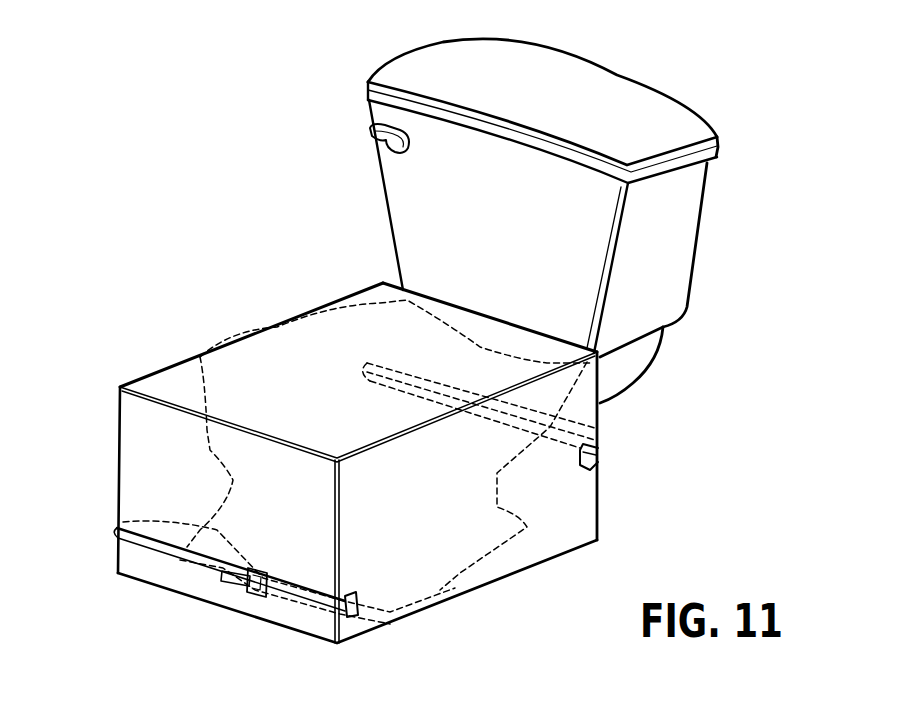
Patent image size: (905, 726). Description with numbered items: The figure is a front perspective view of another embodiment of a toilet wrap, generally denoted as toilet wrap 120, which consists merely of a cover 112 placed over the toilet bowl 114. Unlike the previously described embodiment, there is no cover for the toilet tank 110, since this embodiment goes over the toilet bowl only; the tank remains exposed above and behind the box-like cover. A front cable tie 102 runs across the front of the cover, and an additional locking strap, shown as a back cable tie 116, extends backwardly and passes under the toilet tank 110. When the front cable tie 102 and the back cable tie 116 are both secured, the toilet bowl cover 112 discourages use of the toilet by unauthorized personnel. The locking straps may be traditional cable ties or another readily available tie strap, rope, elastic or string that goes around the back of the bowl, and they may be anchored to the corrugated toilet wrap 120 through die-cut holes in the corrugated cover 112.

The front cable tie 102 is at (317, 602).
The toilet tank 110 is at (685, 233).
The toilet bowl cover 112 is at (225, 387).
The toilet bowl 114 is at (187, 547).
The back cable tie 116 is at (600, 455).
The toilet wrap 120 is at (250, 272).